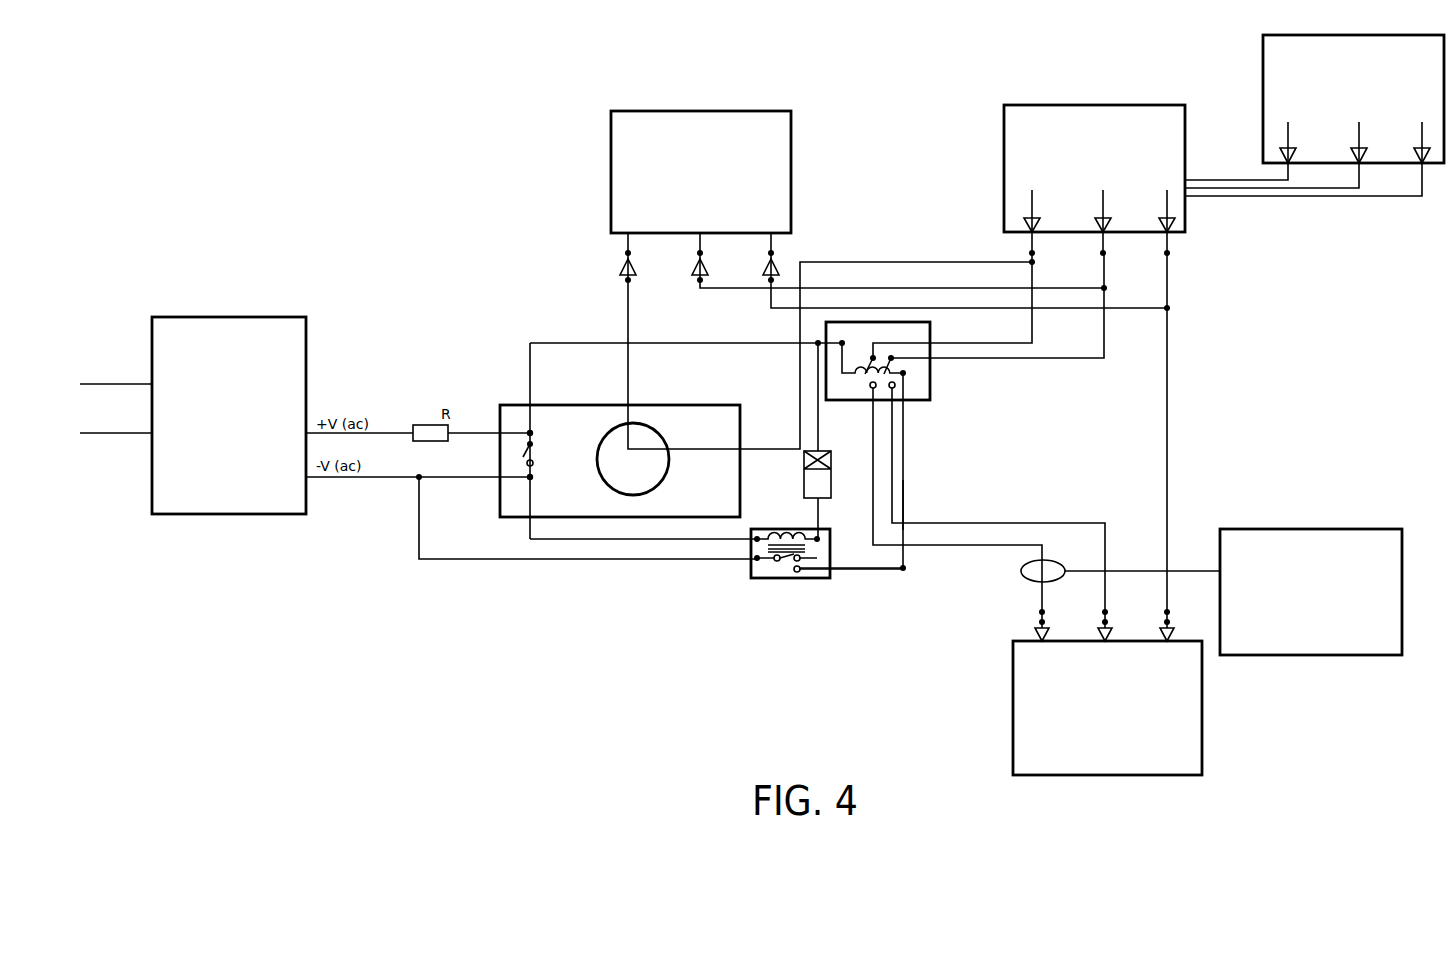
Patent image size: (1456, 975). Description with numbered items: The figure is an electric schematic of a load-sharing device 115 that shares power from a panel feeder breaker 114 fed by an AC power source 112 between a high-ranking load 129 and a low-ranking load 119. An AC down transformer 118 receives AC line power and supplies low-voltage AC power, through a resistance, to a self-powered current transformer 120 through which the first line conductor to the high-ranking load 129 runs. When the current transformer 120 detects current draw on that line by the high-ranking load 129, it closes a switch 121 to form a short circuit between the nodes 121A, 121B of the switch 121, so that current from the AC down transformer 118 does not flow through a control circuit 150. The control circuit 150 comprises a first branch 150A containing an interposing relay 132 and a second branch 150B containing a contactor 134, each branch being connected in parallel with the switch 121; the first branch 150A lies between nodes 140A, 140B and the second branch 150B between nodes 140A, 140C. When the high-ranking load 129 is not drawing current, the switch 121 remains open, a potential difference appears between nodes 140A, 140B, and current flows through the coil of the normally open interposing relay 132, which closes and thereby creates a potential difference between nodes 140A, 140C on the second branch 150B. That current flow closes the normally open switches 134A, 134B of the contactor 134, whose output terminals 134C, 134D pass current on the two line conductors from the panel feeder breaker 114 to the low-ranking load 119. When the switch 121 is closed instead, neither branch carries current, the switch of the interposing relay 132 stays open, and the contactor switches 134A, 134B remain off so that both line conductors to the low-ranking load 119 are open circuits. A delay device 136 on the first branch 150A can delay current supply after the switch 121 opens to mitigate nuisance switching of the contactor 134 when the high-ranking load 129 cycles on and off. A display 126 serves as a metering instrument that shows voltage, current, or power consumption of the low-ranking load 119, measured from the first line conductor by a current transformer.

The AC power source 112 is at (1263, 98).
The panel feeder breaker 114 is at (1048, 104).
The load-sharing device 115 is at (340, 145).
The AC down transformer 118 is at (280, 316).
The low ranking load 119 is at (1013, 668).
The current transformer 120 is at (586, 405).
The switch 121 is at (523, 457).
The node of switch 121A is at (530, 433).
The node of switch 121B is at (530, 478).
The display 126 is at (1247, 528).
The high ranking load 129 is at (636, 110).
The interposing relay 132 is at (751, 578).
The contactor 134 is at (930, 380).
The switch of contactor 134A is at (871, 358).
The switch of contactor 134B is at (890, 358).
The relay output terminal L1 134C is at (873, 387).
The relay output terminal L2 134D is at (892, 387).
The delay device 136 is at (832, 485).
The node 140A is at (818, 343).
The node 140B is at (757, 539).
The node 140C is at (903, 568).
The control circuit 150 is at (827, 400).
The first branch 150A is at (827, 400).
The second branch 150B is at (903, 505).